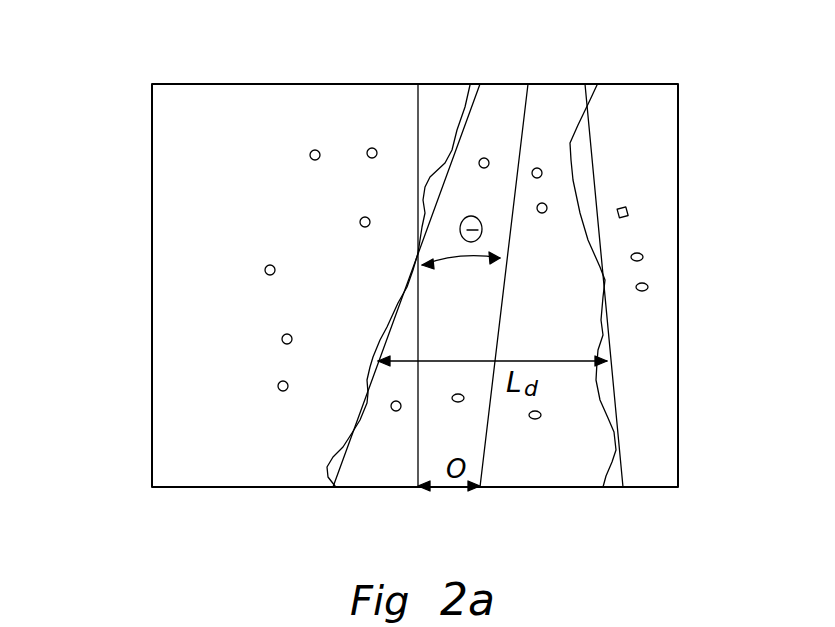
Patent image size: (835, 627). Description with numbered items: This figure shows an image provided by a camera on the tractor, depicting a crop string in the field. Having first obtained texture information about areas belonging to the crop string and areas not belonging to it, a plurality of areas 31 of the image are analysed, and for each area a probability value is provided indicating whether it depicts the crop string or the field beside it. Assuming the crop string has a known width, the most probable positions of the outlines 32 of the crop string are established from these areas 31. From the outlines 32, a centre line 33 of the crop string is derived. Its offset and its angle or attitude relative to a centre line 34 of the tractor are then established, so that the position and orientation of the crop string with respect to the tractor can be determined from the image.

The areas of the image 31 is at (400, 298).
The outlines of the crop string 32 is at (405, 297).
The centre line of the crop string 33 is at (499, 312).
The centre line of the tractor 34 is at (420, 318).